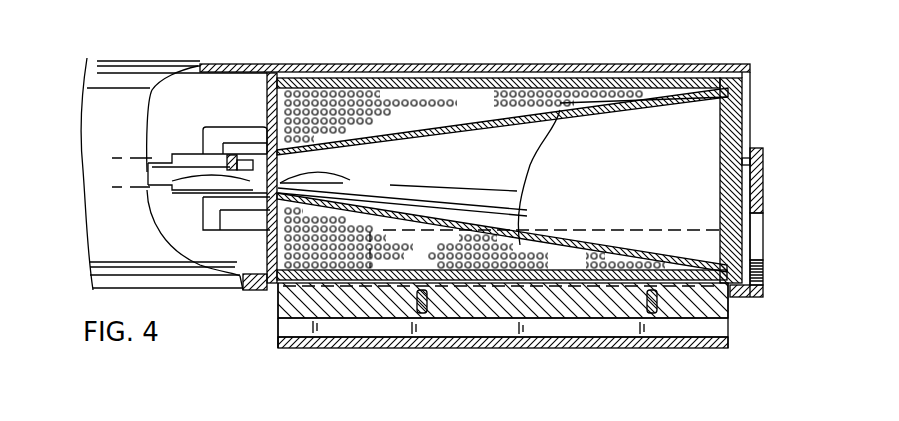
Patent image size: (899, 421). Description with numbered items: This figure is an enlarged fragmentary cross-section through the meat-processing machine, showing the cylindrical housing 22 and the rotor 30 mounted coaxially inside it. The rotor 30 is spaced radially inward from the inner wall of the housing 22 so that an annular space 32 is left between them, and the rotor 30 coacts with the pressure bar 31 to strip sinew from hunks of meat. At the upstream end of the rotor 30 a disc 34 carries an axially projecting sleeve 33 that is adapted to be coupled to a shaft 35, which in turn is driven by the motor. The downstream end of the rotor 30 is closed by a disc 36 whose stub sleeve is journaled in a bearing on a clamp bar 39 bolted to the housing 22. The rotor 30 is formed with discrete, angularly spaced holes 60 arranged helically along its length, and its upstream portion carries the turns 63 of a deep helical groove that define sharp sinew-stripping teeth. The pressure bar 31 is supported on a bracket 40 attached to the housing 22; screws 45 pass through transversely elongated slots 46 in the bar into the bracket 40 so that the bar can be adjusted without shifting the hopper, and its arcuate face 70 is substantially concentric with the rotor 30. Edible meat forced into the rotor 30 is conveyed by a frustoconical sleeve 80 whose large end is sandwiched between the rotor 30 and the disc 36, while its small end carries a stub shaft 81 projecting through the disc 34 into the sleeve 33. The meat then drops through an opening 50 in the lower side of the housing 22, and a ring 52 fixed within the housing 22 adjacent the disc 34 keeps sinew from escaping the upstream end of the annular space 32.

The housing 22 is at (565, 68).
The rotor 30 is at (506, 68).
The pressure bar 31 is at (693, 313).
The annular space 32 is at (279, 339).
The sleeve 33 is at (163, 190).
The disc 34 is at (265, 247).
The shaft 35 is at (159, 150).
The disc 36 is at (733, 115).
The clamp bar 39 is at (757, 198).
The bracket 40 is at (527, 346).
The screws 45 is at (494, 340).
The slots 46 is at (348, 366).
The opening 50 is at (258, 132).
The ring 52 is at (265, 86).
The holes 60 is at (375, 108).
The turns 63 is at (357, 80).
The arcuate face 70 is at (565, 266).
The frustoconical sleeve 80 is at (647, 105).
The stub shaft 81 is at (498, 189).